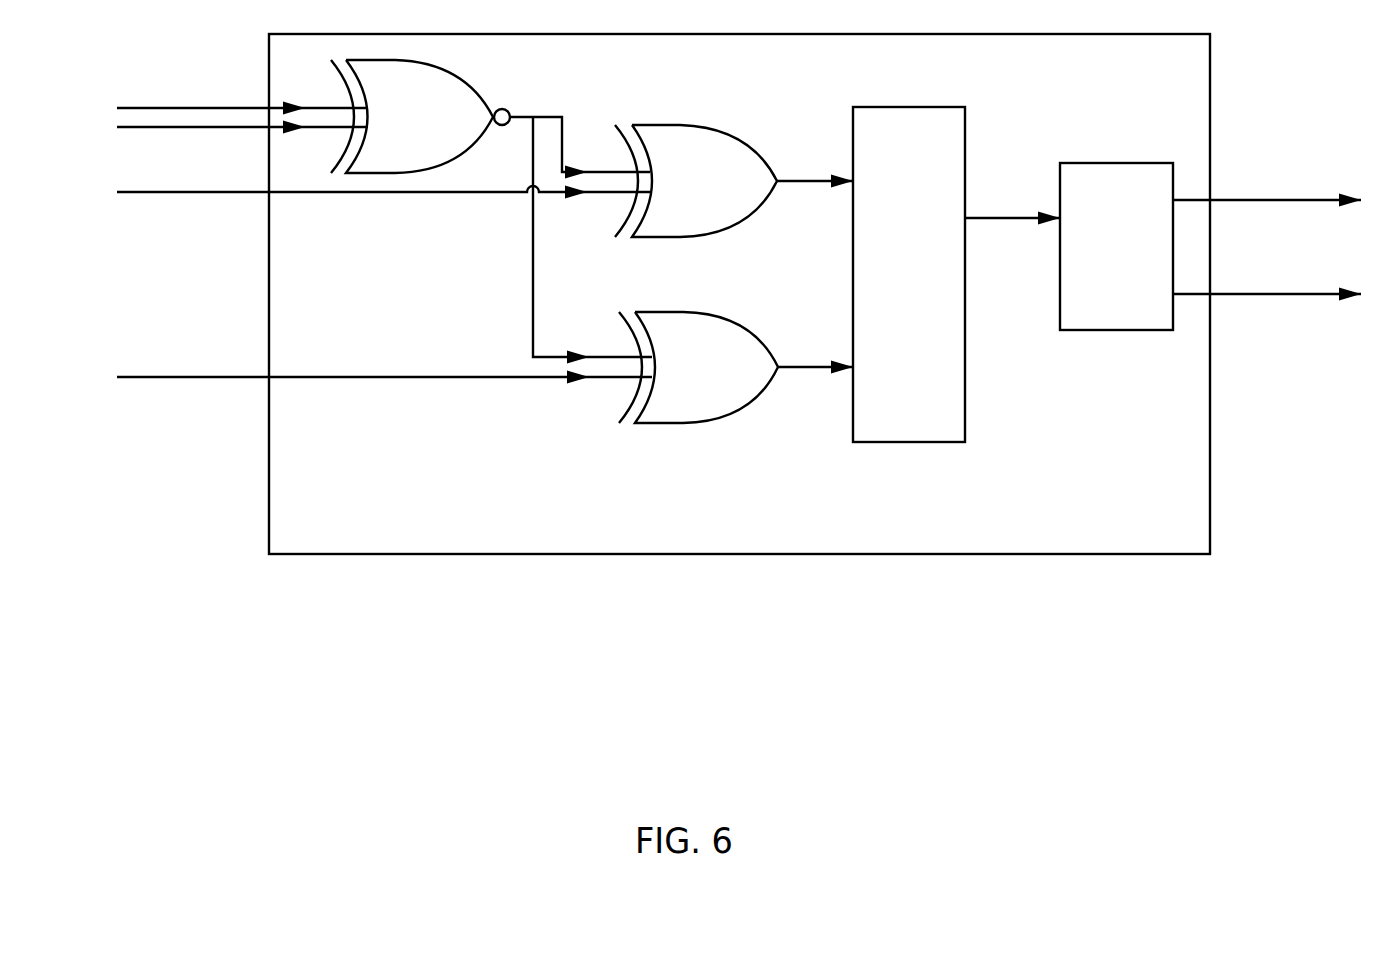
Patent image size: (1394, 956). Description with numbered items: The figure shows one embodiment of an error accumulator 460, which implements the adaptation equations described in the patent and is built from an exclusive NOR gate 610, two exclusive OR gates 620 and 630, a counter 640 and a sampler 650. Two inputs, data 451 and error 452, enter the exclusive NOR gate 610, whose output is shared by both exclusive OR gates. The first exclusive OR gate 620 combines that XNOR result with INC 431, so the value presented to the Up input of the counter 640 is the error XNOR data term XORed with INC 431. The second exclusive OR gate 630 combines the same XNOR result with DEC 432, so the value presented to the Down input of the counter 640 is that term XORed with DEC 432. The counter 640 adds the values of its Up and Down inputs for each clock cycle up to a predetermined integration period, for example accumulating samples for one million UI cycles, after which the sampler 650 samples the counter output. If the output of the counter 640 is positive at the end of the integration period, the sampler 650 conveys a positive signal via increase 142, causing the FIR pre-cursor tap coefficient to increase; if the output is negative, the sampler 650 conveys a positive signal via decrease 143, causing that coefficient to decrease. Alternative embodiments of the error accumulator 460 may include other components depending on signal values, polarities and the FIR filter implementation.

The error accumulator 460 is at (842, 544).
The data 451 is at (242, 96).
The error 452 is at (242, 139).
The INC 431 is at (383, 204).
The DEC 432 is at (384, 365).
The exclusive NOR gate 610 is at (437, 129).
The exclusive OR gate 620 is at (713, 194).
The exclusive OR gate 630 is at (720, 379).
The counter 640 is at (925, 294).
The sampler 650 is at (1133, 269).
The increase 142 is at (1267, 188).
The decrease 143 is at (1269, 282).